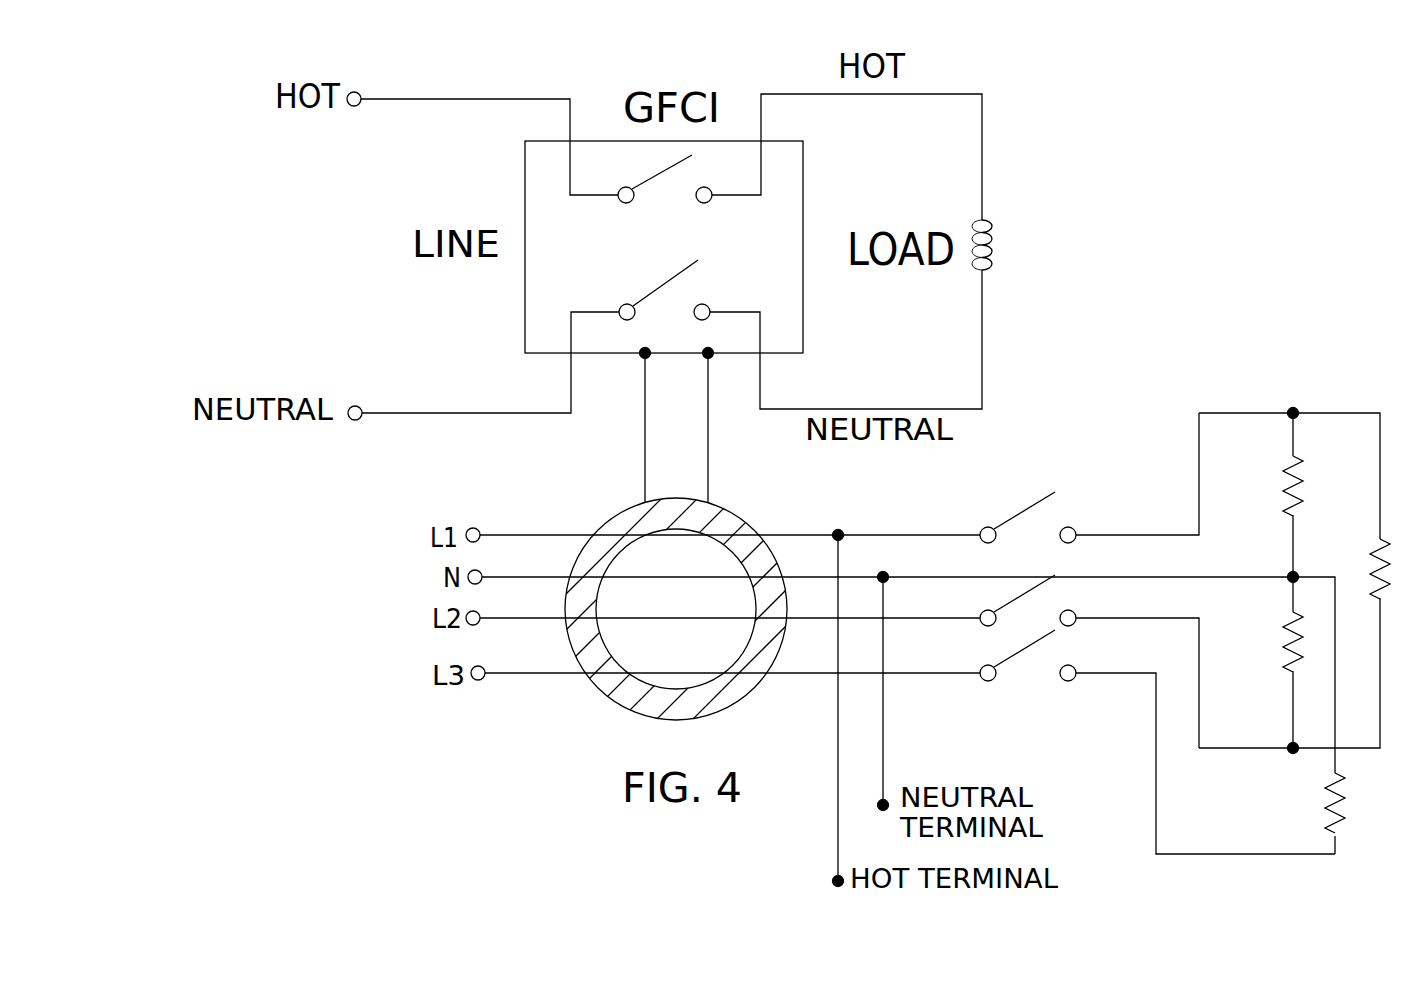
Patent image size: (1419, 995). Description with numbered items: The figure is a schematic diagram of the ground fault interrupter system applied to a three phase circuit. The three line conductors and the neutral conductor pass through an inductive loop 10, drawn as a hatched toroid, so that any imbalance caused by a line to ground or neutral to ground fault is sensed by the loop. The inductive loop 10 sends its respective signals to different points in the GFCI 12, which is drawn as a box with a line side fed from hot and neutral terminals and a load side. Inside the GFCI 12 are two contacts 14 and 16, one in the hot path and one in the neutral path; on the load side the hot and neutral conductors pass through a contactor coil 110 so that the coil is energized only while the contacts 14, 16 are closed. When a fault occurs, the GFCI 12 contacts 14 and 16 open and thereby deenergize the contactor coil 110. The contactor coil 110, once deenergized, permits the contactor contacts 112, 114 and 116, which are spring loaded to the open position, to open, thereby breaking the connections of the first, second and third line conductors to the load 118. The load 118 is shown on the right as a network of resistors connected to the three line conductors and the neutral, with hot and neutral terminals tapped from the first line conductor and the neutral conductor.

The inductive loop 10 is at (722, 500).
The GFCI 12 is at (555, 212).
The contact 14 is at (657, 176).
The contact 16 is at (671, 284).
The contactor coil 110 is at (994, 220).
The contactor contact 112 is at (1043, 500).
The contactor contact 114 is at (1033, 587).
The contactor contact 116 is at (1047, 632).
The load 118 is at (1327, 477).